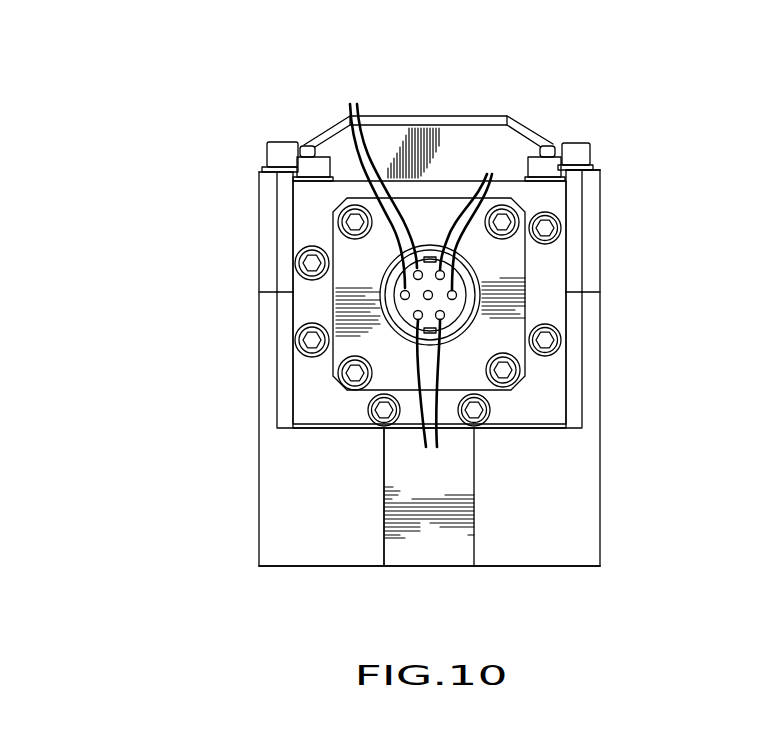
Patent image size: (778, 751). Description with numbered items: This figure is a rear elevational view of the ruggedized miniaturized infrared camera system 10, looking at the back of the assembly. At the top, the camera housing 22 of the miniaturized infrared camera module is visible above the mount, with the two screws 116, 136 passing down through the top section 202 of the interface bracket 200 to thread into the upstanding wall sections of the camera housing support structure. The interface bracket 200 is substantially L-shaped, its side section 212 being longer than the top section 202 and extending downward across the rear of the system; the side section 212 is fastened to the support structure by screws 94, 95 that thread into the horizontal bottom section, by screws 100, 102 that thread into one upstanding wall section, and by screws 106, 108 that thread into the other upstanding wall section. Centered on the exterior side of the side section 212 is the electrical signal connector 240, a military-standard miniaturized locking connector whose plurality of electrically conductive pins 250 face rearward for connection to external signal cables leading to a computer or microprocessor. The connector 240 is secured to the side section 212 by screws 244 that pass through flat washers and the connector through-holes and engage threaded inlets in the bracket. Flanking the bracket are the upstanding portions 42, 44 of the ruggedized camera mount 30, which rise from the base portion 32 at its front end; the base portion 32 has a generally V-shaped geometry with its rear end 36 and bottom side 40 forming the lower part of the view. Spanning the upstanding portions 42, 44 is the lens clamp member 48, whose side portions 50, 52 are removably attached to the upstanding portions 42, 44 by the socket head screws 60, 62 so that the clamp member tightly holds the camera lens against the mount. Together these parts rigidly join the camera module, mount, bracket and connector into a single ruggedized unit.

The ruggedized miniaturized infrared camera system 10 is at (112, 252).
The camera housing 22 is at (402, 116).
The ruggedized camera mount 30 is at (257, 492).
The base portion 32 is at (602, 503).
The rear end 36 is at (437, 553).
The bottom side 40 is at (270, 567).
The upstanding portion 42 is at (267, 395).
The upstanding portion 44 is at (592, 368).
The lens clamp member 48 is at (598, 172).
The side portion 50 is at (263, 236).
The side portion 52 is at (590, 243).
The screw 60 is at (273, 153).
The screw 62 is at (576, 143).
The screw 94 is at (382, 426).
The screw 95 is at (473, 426).
The screw 100 is at (310, 263).
The screw 102 is at (310, 340).
The screw 106 is at (550, 226).
The screw 108 is at (547, 340).
The screw 116 is at (307, 146).
The screw 136 is at (542, 160).
The interface bracket 200 is at (303, 202).
The top section 202 is at (443, 180).
The side section 212 is at (540, 413).
The electrical signal connector 240 is at (508, 293).
The screw 244 is at (354, 212).
The electrically conductive pins 250 is at (421, 274).